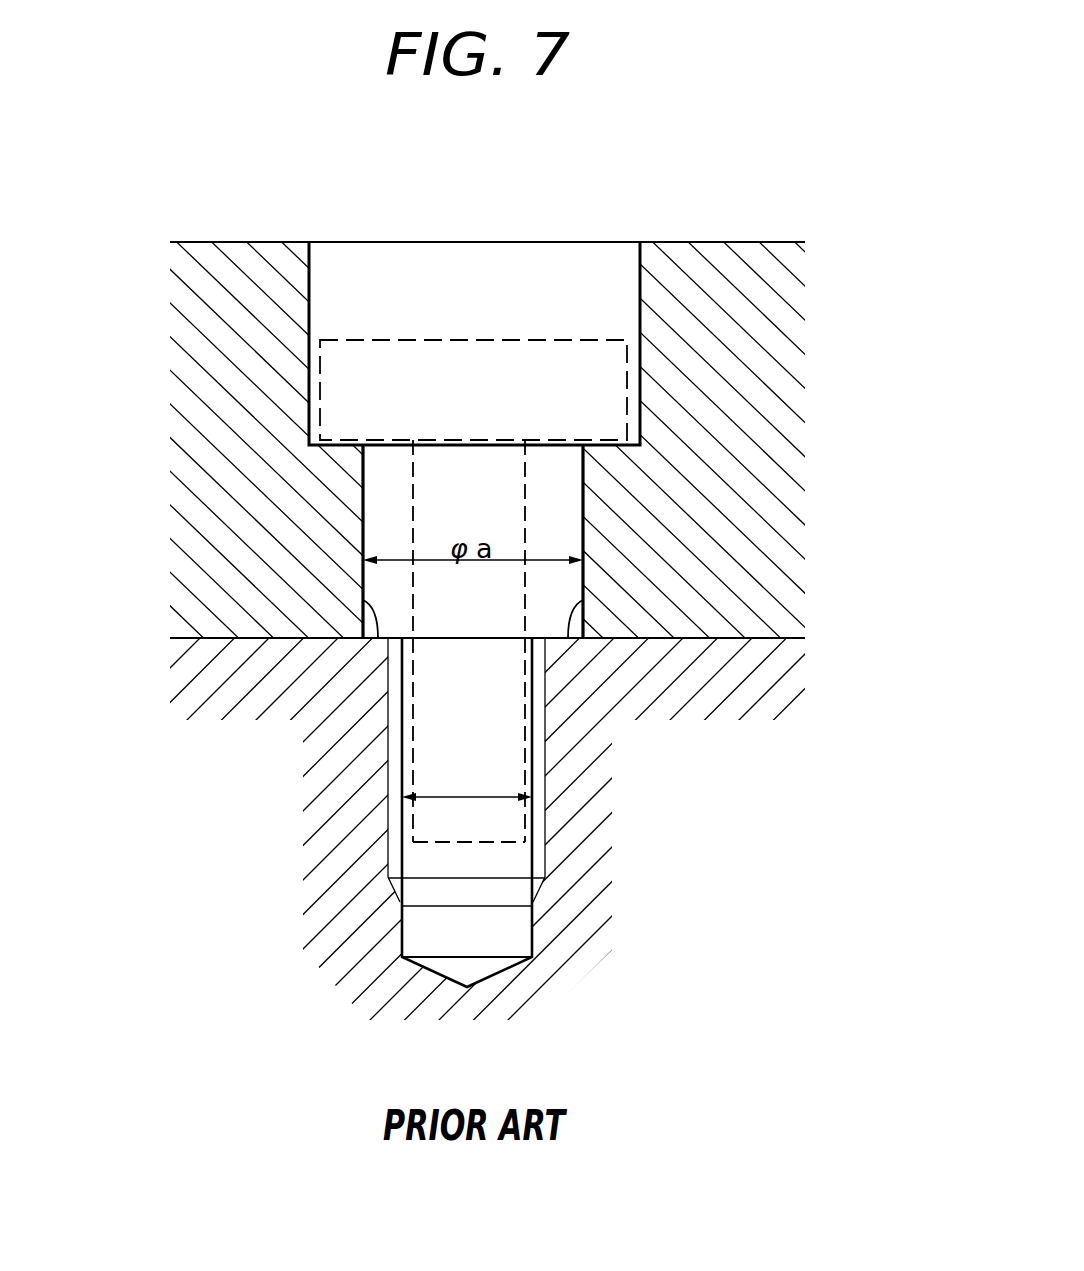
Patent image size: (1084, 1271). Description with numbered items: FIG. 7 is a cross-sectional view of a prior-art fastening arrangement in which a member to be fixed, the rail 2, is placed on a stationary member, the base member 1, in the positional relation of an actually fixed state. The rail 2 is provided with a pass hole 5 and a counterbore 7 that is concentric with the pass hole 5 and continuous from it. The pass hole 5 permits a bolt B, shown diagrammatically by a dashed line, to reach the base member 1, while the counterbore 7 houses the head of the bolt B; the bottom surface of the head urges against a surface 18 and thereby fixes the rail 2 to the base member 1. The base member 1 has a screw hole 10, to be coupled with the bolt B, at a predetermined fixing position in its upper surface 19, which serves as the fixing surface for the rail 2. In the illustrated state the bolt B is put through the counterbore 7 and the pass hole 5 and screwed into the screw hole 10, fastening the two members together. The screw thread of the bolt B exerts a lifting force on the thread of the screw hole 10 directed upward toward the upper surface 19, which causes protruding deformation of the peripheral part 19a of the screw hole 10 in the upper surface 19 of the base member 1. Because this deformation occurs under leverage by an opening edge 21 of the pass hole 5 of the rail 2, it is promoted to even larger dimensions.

The base member 1 is at (697, 812).
The rail 2 is at (708, 268).
The pass hole 5 is at (383, 495).
The counterbore 7 is at (468, 265).
The screw hole 10 is at (422, 717).
The surface 18 is at (610, 440).
The upper surface 19 is at (318, 637).
The peripheral part of the screw hole 19a is at (362, 630).
The opening edge 21 is at (357, 636).
The bolt B is at (536, 328).